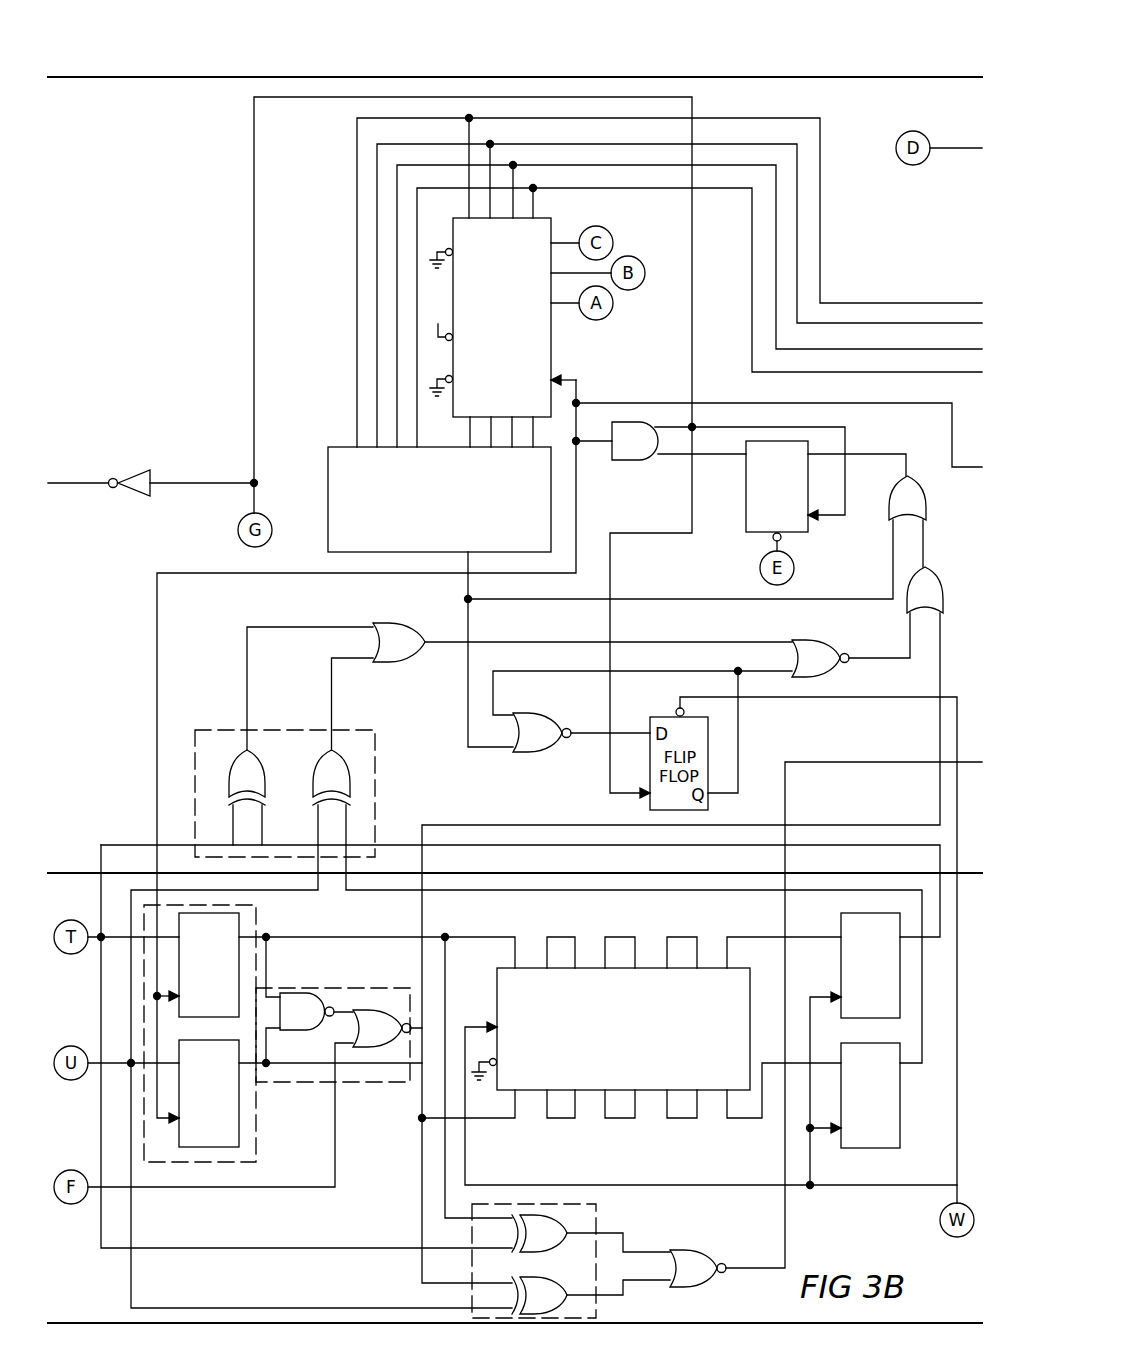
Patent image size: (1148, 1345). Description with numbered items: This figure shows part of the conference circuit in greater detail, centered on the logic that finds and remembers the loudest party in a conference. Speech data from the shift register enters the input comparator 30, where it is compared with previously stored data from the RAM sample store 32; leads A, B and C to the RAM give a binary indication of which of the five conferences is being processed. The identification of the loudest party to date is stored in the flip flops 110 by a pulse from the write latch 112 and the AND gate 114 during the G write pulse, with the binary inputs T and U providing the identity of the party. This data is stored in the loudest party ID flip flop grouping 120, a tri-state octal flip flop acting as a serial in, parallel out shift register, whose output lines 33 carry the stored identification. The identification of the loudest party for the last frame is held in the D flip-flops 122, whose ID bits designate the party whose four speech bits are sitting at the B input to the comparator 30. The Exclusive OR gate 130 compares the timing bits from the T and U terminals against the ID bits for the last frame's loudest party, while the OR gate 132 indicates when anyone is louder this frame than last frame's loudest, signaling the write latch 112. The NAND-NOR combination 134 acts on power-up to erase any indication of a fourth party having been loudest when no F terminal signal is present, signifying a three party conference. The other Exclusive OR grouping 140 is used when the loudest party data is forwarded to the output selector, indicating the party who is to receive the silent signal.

The input comparator 30 is at (328, 466).
The sample store RAM 32 is at (565, 368).
The latch output lines 33 is at (652, 1090).
The flip flops 110 is at (258, 925).
The write latch 112 is at (800, 535).
The AND gate 114 is at (624, 462).
The loudest party ID flip flop grouping 120 is at (656, 1000).
The D flip-flops 122 is at (841, 958).
The Exclusive OR gate 130 is at (375, 792).
The OR gate 132 is at (394, 623).
The NAND-NOR combination 134 is at (313, 992).
The Exclusive OR grouping 140 is at (598, 1216).